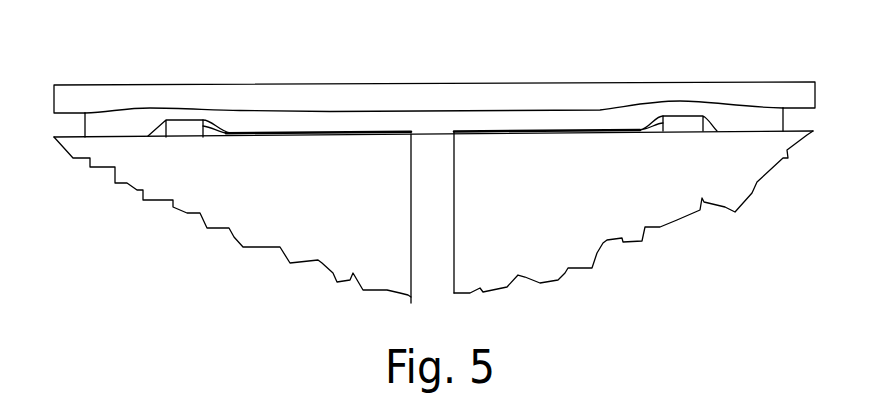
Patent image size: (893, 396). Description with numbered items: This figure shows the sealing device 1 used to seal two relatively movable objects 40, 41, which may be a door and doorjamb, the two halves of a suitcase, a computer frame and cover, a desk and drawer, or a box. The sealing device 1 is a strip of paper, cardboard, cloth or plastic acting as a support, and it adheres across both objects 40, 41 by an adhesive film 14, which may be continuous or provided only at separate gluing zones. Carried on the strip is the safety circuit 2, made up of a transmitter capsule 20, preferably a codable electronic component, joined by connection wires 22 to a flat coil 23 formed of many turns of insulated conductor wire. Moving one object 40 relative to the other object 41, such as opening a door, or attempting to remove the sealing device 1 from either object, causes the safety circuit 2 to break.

The sealing device 1 is at (213, 78).
The adhesive film 14 is at (115, 125).
The safety circuit 2 is at (231, 140).
The connection wires 22 is at (333, 137).
The flat coil 23 is at (187, 128).
The transmitter capsule 20 is at (685, 126).
The relatively movable object 40 is at (352, 235).
The relatively movable object 41 is at (523, 230).